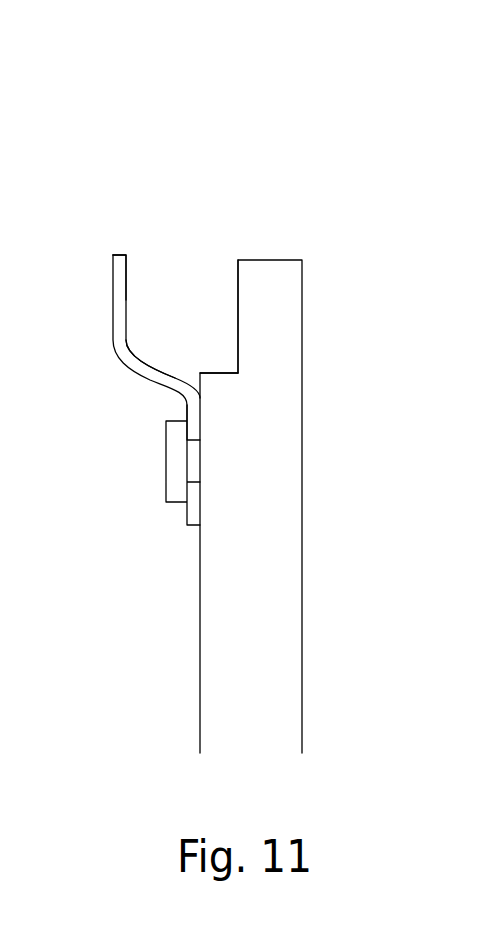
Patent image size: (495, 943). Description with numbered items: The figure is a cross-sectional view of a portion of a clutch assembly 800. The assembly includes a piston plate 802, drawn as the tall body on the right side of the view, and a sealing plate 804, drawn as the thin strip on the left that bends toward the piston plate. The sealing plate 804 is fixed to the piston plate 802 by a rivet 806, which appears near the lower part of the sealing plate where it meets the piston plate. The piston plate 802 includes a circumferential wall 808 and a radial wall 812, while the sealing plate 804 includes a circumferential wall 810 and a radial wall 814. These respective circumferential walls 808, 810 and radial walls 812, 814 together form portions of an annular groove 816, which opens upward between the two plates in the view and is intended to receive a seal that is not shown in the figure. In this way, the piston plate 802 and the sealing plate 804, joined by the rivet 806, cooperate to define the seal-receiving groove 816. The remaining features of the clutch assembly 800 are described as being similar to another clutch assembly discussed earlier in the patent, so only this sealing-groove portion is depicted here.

The clutch assembly 800 is at (167, 192).
The piston plate 802 is at (275, 281).
The sealing plate 804 is at (118, 295).
The rivet 806 is at (178, 472).
The circumferential wall 808 is at (219, 373).
The circumferential wall 810 is at (165, 372).
The radial wall 812 is at (236, 288).
The radial wall 814 is at (127, 270).
The annular groove 816 is at (210, 195).